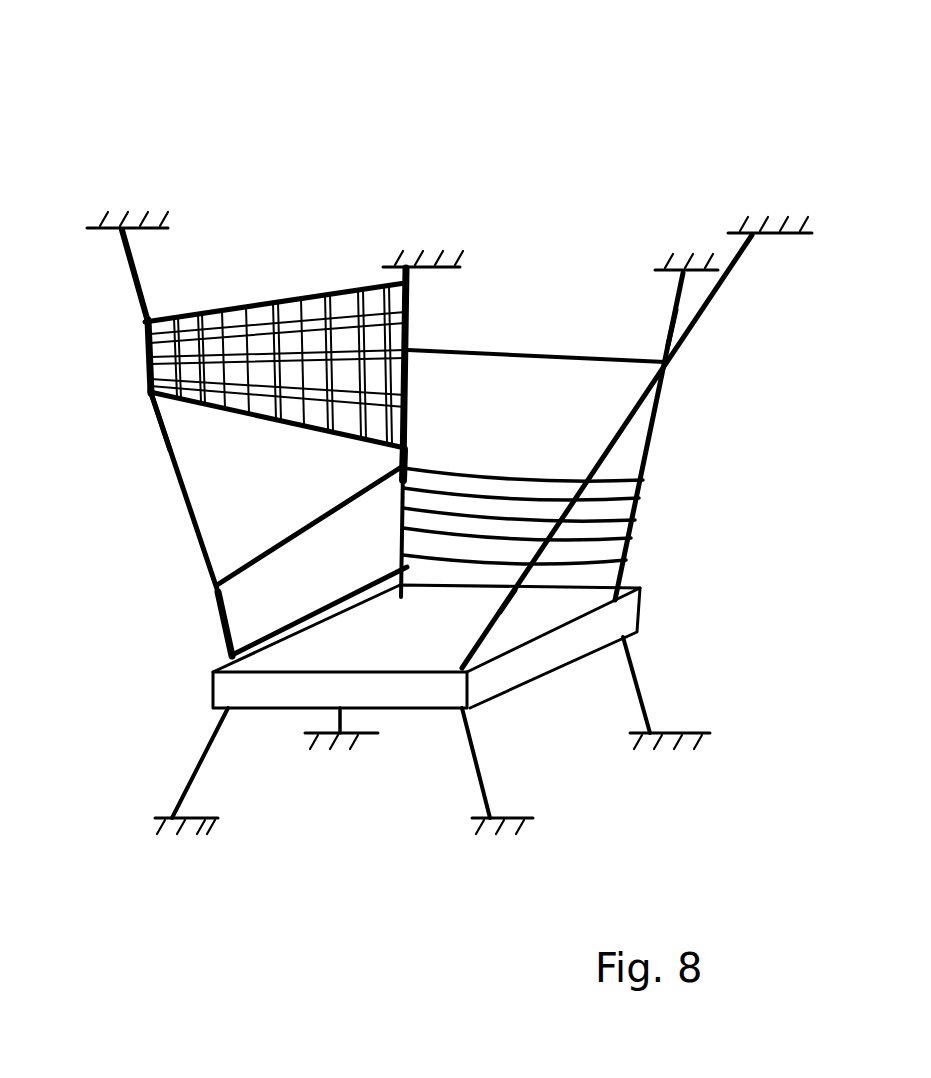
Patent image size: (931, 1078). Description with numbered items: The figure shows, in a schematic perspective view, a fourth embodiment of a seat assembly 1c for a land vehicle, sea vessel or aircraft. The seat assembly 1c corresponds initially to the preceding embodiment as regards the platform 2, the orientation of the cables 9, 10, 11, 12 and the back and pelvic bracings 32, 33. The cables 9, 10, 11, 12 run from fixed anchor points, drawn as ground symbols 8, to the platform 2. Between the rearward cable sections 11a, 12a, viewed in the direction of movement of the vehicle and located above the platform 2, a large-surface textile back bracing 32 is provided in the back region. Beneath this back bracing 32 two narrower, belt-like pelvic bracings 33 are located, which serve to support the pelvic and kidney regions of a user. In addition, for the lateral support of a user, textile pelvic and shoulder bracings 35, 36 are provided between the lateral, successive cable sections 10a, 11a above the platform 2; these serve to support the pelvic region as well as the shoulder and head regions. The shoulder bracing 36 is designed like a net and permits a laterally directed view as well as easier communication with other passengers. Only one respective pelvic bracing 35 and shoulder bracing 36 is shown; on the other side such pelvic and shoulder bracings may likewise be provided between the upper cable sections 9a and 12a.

The seat assembly 1c is at (504, 160).
The platform 2 is at (672, 587).
The fixed bearing / ground anchor 8 is at (130, 222).
The cable 9 is at (725, 331).
The upper cable section 9a is at (500, 600).
The cable 10 is at (170, 497).
The lateral cable section 10a is at (160, 418).
The cable 11 is at (395, 268).
The rearward cable section 11a is at (397, 453).
The cable 12 is at (648, 292).
The rearward cable section 12a is at (668, 338).
The back bracing 32 is at (490, 366).
The pelvic bracings 33 is at (600, 547).
The pelvic bracing 35 is at (295, 568).
The shoulder bracing 36 is at (240, 338).